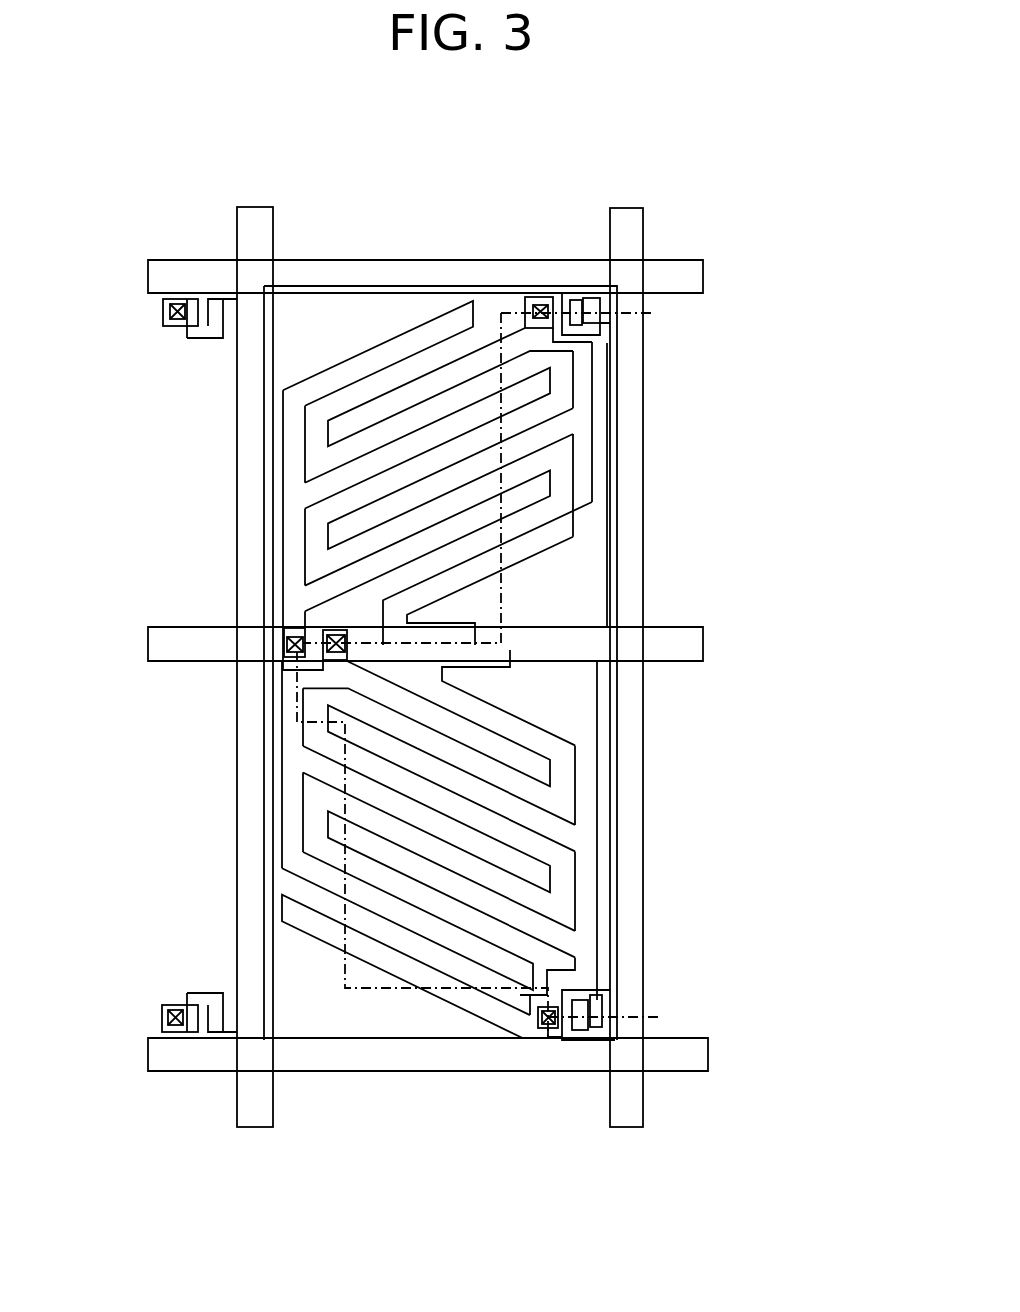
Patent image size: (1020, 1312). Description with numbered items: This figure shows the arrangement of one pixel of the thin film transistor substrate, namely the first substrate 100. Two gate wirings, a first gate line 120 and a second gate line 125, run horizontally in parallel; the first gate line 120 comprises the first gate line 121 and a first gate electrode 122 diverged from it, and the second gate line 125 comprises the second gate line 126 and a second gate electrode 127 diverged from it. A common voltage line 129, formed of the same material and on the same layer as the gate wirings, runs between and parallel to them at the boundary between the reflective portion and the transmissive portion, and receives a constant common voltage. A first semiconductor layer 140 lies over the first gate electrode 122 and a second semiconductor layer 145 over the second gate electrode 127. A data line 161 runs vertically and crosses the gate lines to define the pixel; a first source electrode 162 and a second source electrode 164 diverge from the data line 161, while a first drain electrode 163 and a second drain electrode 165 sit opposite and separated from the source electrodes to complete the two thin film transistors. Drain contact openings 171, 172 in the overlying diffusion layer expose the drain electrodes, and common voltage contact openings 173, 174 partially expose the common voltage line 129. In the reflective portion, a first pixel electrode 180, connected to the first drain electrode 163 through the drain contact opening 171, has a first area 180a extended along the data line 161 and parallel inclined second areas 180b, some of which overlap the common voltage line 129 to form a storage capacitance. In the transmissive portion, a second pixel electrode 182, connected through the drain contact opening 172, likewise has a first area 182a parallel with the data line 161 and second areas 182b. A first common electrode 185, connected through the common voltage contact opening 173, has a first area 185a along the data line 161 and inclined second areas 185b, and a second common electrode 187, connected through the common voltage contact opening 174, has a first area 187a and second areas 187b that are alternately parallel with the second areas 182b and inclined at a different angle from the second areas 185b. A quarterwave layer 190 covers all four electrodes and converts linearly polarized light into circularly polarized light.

The first substrate 100 is at (705, 180).
The first gate line 120 is at (410, 184).
The first gate line 121 is at (430, 262).
The first gate electrode 122 is at (524, 326).
The second gate line 125 is at (440, 1166).
The second gate line 126 is at (450, 1072).
The second gate electrode 127 is at (595, 985).
The common voltage line 129 is at (650, 627).
The first semiconductor layer 140 is at (593, 333).
The second semiconductor layer 145 is at (582, 990).
The data line 161 is at (648, 408).
The first source electrode 162 is at (591, 294).
The first drain electrode 163 is at (570, 300).
The second source electrode 164 is at (603, 1042).
The second drain electrode 165 is at (562, 1040).
The drain contact opening 171 is at (538, 308).
The drain contact opening 172 is at (548, 1034).
The common voltage contact opening 173 is at (287, 643).
The common voltage contact opening 174 is at (332, 632).
The first pixel electrode 180 is at (738, 432).
The first area 180a is at (595, 440).
The second areas 180b is at (455, 385).
The second pixel electrode 182 is at (748, 768).
The first area 182a is at (598, 815).
The second areas 182b is at (548, 785).
The first common electrode 185 is at (107, 423).
The first area 185a is at (283, 437).
The second areas 185b is at (327, 369).
The second common electrode 187 is at (107, 755).
The first area 187a is at (282, 795).
The second areas 187b is at (370, 705).
The quarterwave layer 190 is at (620, 715).